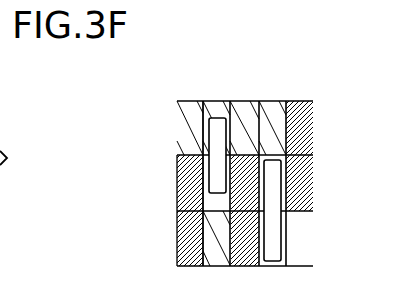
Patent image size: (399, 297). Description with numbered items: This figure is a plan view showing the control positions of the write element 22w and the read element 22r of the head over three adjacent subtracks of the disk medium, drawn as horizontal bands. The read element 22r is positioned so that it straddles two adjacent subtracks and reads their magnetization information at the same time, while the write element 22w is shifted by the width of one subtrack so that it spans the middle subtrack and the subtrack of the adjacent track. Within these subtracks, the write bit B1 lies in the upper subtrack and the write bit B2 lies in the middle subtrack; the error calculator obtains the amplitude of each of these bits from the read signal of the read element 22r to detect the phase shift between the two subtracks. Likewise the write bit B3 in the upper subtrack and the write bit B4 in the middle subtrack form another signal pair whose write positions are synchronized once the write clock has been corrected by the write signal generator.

The read element 22r is at (217, 117).
The write element 22w is at (272, 238).
The write bit B1 is at (222, 102).
The write bit B2 is at (231, 140).
The write bit B3 is at (273, 102).
The write bit B4 is at (282, 184).